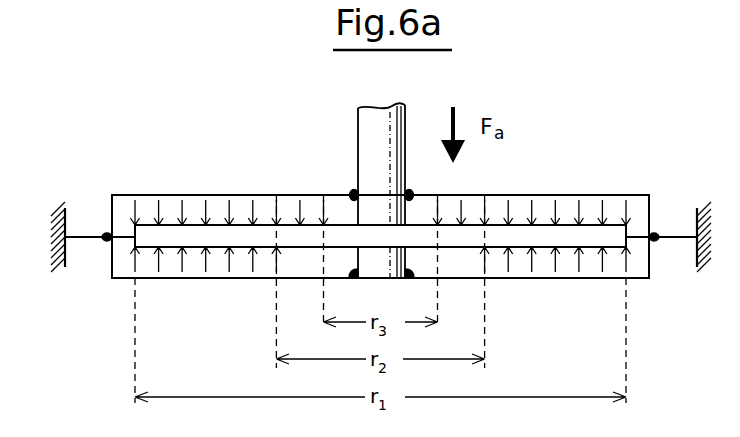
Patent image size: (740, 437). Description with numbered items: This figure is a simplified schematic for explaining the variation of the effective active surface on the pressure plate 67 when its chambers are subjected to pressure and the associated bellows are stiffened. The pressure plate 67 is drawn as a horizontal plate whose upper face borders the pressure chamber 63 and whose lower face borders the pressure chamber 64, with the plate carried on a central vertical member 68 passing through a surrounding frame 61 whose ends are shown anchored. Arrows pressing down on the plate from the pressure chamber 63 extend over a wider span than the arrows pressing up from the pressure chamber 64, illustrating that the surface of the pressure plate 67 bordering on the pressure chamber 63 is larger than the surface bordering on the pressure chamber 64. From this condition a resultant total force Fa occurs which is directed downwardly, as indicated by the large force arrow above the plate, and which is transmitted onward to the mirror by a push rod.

The outer frame / housing 61 is at (618, 192).
The pressure chamber 63 is at (567, 208).
The pressure chamber 64 is at (540, 266).
The pressure plate 67 is at (520, 233).
The shaft 68 is at (373, 140).